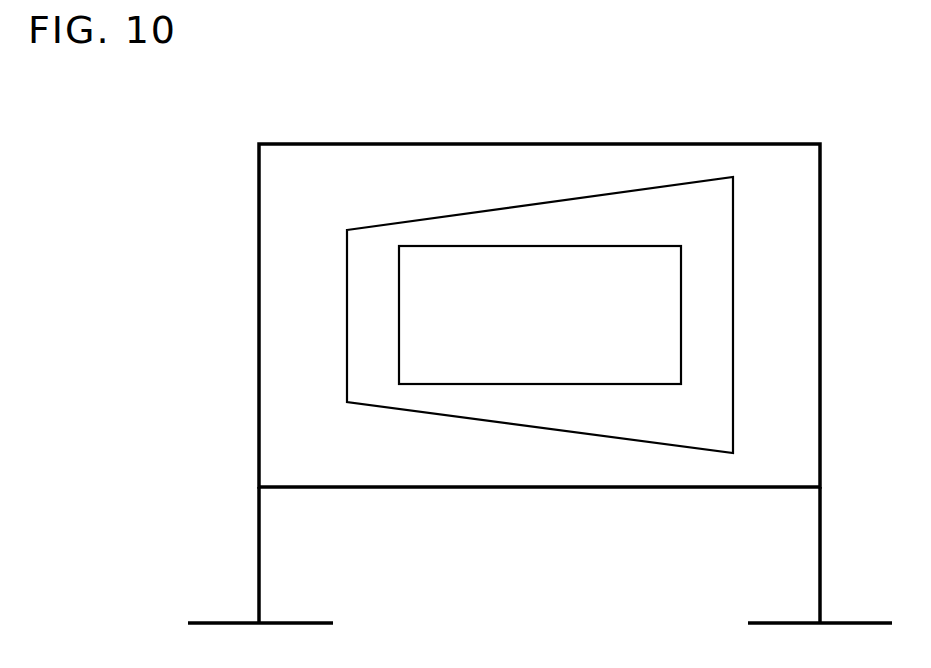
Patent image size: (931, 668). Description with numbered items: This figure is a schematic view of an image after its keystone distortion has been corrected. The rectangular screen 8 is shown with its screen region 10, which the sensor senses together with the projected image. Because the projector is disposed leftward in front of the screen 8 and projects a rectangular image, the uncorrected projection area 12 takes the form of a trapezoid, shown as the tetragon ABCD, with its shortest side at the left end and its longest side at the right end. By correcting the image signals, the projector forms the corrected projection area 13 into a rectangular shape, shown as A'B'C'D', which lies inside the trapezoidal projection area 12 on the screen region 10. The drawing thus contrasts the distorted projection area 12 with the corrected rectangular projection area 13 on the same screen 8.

The screen 8 is at (755, 99).
The screen region 10 is at (703, 143).
The projection area 12 is at (586, 196).
The projection area 13 is at (508, 246).